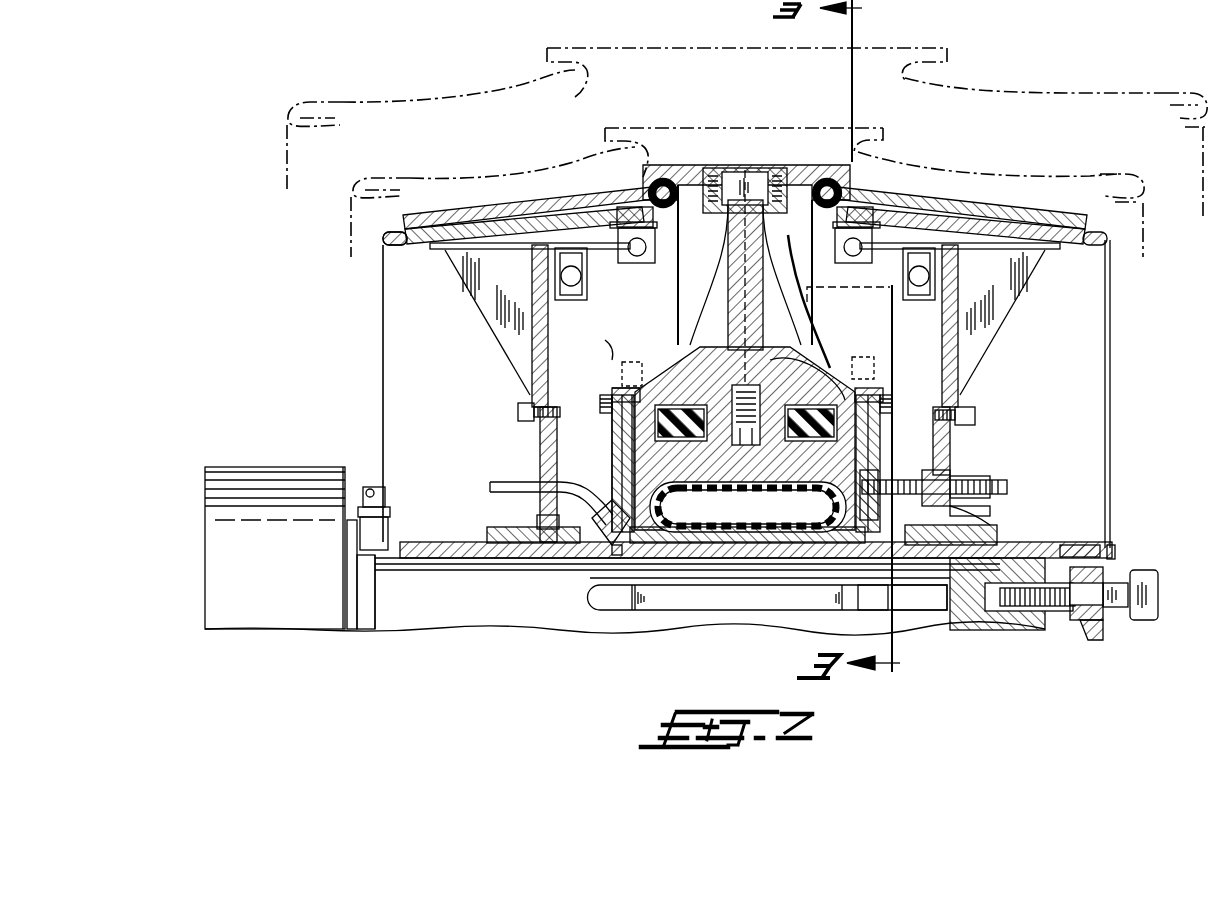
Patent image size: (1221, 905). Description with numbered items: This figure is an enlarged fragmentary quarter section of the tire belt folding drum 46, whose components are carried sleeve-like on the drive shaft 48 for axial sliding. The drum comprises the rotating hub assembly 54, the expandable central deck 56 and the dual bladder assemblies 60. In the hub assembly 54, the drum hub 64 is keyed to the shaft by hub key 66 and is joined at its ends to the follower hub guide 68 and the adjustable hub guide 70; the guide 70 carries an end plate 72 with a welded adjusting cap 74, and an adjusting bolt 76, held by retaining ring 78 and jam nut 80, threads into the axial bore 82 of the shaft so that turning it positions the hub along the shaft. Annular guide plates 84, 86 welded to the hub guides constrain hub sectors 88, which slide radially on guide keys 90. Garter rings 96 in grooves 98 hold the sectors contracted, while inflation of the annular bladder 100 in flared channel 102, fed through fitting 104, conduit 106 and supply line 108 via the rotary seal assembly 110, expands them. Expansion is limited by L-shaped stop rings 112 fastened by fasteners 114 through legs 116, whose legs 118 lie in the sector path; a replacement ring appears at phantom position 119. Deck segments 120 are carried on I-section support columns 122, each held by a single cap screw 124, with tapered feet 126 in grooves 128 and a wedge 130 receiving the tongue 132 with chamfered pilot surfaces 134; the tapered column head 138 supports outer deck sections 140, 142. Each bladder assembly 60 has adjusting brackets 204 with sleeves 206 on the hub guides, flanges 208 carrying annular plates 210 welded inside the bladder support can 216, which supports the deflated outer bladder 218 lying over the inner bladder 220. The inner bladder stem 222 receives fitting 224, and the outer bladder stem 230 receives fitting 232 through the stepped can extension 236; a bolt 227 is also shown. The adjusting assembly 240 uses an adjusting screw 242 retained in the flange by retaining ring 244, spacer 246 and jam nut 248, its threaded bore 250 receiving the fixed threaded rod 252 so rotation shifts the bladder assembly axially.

The tire belt folding drum 46 is at (285, 657).
The drive shaft 48 is at (400, 620).
The rotating hub assembly 54 is at (612, 560).
The expandable central deck 56 is at (740, 118).
The dual bladder assemblies 60 is at (1120, 218).
The drum hub 64 is at (790, 548).
The hub key 66 is at (703, 603).
The follower hub guide 68 is at (472, 560).
The adjustable hub guide 70 is at (873, 598).
The circular end plate 72 is at (1093, 628).
The adjusting cap 74 is at (1090, 625).
The adjusting bolt 76 is at (1148, 570).
The retaining ring 78 is at (1078, 612).
The jam nut 80 is at (1115, 618).
The threaded axial bore 82 is at (1000, 620).
The annular guide plate 84 is at (613, 458).
The annular guide plate 86 is at (880, 436).
The hub sectors 88 is at (613, 483).
The guide keys 90 is at (612, 452).
The rubber garter rings 96 is at (700, 440).
The annular grooves 98 is at (680, 437).
The annular bladder 100 is at (780, 498).
The flared channel 102 is at (747, 507).
The fitting 104 is at (743, 552).
The conduit 106 is at (697, 570).
The supply line 108 is at (492, 486).
The rotary seal assembly 110 is at (252, 466).
The annular stop rings 112 is at (608, 390).
The fasteners 114 is at (612, 404).
The radially inwardly extending legs 116 is at (612, 425).
The axially inwardly extending legs 118 is at (632, 378).
The phantom position 119 is at (599, 341).
The deck segments 120 is at (683, 158).
The inner deck support column 122 is at (800, 287).
The recessed elongated cap screw 124 is at (762, 178).
The tapered feet 126 is at (858, 378).
The annular grooves 128 is at (880, 419).
The symmetrical wedge 130 is at (790, 352).
The symmetrical wedge tongue 132 is at (862, 380).
The pilot surfaces 134 is at (813, 359).
The radially outer column head 138 is at (812, 218).
The outer deck section 140 is at (812, 185).
The outer deck section 142 is at (660, 165).
The adjusting brackets 204 is at (522, 455).
The cylindrical sleeves 206 is at (488, 538).
The annular radial flanges 208 is at (535, 520).
The annular plates 210 is at (532, 332).
The cylindrical bladder support can 216 is at (468, 248).
The outer annular inflatable bladder 218 is at (523, 216).
The inner annular inflatable bladder 220 is at (392, 243).
The stem 222 is at (505, 326).
The fitting 224 is at (560, 290).
The bolt 227 is at (518, 410).
The stem 230 is at (648, 190).
The fitting 232 is at (655, 262).
The stepped can extension 236 is at (655, 226).
The adjusting assembly 240 is at (1030, 472).
The adjusting screw 242 is at (1000, 498).
The retaining ring 244 is at (885, 498).
The spacer 246 is at (925, 545).
The jam nut 248 is at (995, 518).
The threaded internal bore 250 is at (962, 474).
The threaded rod 252 is at (1008, 492).